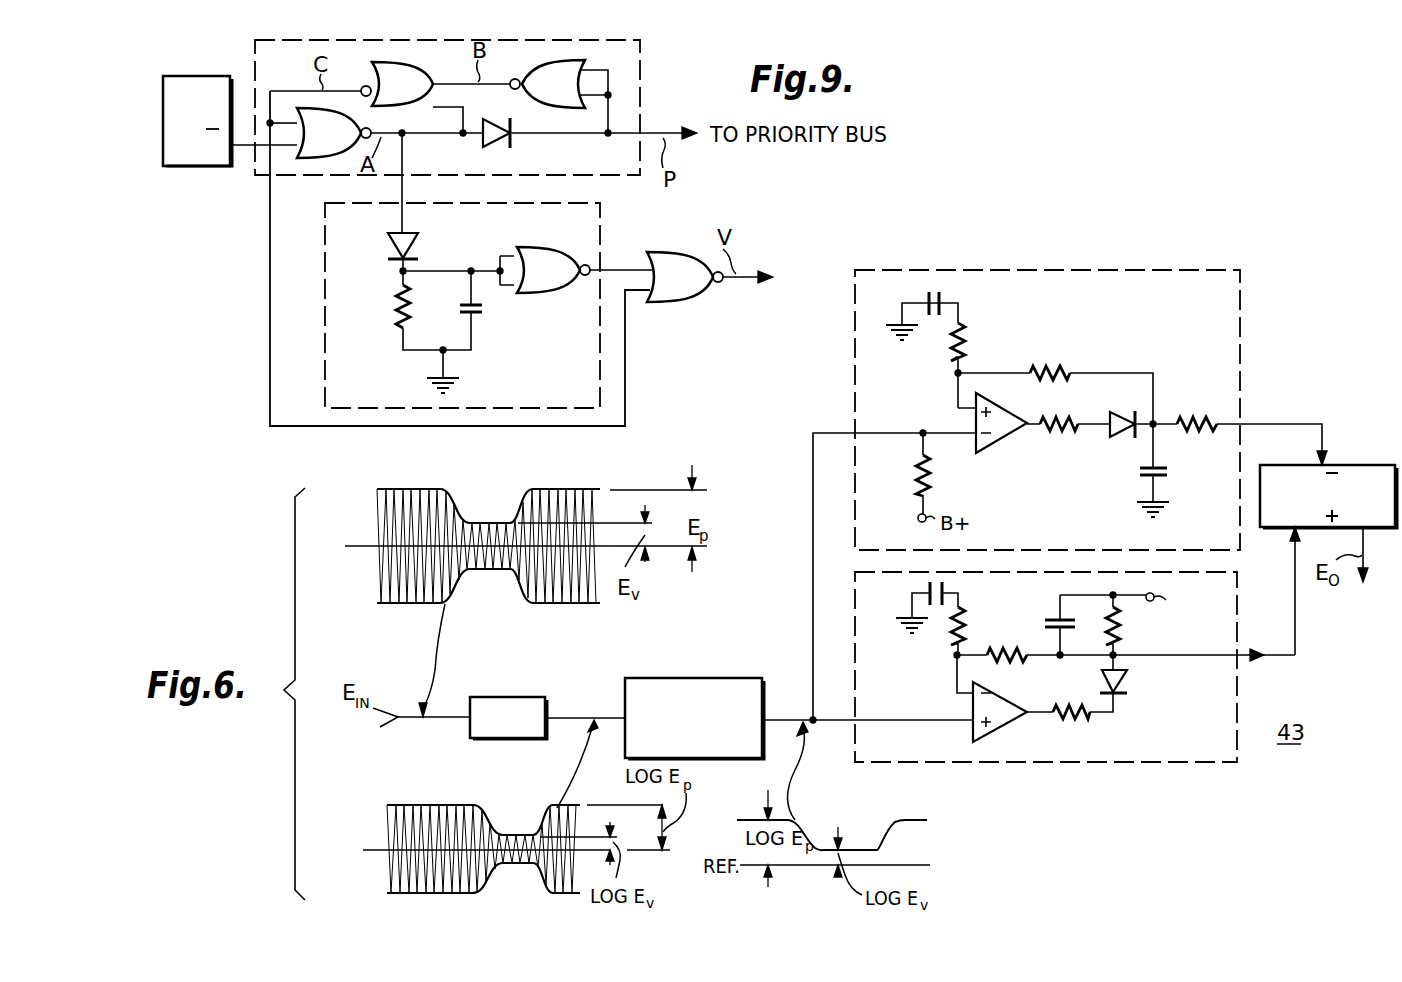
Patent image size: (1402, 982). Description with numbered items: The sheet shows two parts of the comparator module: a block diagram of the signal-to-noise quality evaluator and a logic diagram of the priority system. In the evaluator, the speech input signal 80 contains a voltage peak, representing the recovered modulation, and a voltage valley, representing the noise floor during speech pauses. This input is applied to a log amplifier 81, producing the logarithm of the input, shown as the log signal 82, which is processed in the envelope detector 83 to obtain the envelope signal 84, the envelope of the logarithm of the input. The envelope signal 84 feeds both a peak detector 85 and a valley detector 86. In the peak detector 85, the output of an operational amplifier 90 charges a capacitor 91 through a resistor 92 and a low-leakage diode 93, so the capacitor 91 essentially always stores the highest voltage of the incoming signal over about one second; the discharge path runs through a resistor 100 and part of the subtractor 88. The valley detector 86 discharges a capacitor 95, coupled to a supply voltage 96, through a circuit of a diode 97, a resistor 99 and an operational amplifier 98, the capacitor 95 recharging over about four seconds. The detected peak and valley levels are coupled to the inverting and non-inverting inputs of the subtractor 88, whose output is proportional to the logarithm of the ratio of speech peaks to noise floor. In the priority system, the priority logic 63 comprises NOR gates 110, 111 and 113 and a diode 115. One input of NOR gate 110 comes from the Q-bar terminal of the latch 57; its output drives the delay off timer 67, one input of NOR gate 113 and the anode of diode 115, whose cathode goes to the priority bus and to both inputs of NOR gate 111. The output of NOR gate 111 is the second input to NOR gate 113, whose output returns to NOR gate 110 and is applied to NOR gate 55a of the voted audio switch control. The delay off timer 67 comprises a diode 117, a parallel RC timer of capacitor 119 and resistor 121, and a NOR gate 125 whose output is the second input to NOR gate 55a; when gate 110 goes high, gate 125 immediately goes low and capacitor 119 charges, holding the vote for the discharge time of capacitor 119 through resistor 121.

In FIG. 9, the latch 57 is at (190, 168).
In FIG. 9, the priority logic 63 is at (641, 70).
In FIG. 9, the NOR gate 110 is at (305, 160).
In FIG. 9, the NOR gate 113 is at (381, 80).
In FIG. 9, the NOR gate 111 is at (532, 98).
In FIG. 9, the diode 115 is at (498, 143).
In FIG. 9, the diode 117 is at (418, 240).
In FIG. 9, the capacitor 119 is at (483, 312).
In FIG. 9, the resistor 121 is at (394, 304).
In FIG. 9, the NOR gate 125 is at (558, 247).
In FIG. 9, the delay off timer 67 is at (600, 371).
In FIG. 9, the NOR gate 55a is at (682, 301).
In FIG. 6, the speech input signal 80 is at (519, 522).
In FIG. 6, the log amplifier 81 is at (508, 697).
In FIG. 6, the log signal waveform 82 is at (548, 829).
In FIG. 6, the envelope detector 83 is at (695, 678).
In FIG. 6, the envelope signal 84 is at (897, 820).
In FIG. 6, the peak detector 85 is at (1080, 243).
In FIG. 6, the valley detector 86 is at (1117, 763).
In FIG. 6, the subtractor 88 is at (1356, 465).
In FIG. 6, the operational amplifier 90 is at (995, 440).
In FIG. 6, the capacitor 91 is at (1168, 473).
In FIG. 6, the resistor 92 is at (1057, 440).
In FIG. 6, the diode 93 is at (1110, 440).
In FIG. 6, the capacitor 95 is at (1048, 619).
In FIG. 6, the supply voltage 96 is at (1153, 601).
In FIG. 6, the diode 97 is at (1127, 679).
In FIG. 6, the operational amplifier 98 is at (1007, 698).
In FIG. 6, the resistor 99 is at (1050, 718).
In FIG. 6, the resistor 100 is at (1199, 418).